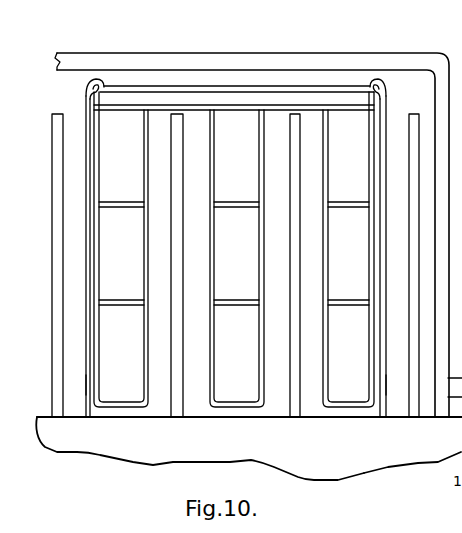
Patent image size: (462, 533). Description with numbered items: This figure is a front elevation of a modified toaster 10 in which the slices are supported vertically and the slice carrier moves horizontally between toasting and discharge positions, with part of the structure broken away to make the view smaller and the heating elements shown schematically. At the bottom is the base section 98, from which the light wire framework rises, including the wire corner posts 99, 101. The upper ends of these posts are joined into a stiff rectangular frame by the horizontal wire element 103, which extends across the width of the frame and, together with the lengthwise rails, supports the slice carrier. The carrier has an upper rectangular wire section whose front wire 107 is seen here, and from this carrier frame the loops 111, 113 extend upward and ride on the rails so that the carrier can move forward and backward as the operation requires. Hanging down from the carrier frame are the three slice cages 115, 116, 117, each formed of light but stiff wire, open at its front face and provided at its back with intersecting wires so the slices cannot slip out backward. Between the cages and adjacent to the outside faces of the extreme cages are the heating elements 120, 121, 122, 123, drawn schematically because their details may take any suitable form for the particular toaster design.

The storage assembly 10 is at (372, 478).
The base section 98 is at (155, 452).
The wire corner post 99 is at (383, 382).
The wire corner post 101 is at (83, 382).
The horizontal wire element 103 is at (260, 88).
The front wire 107 is at (200, 106).
The loop 111 is at (377, 80).
The loop 113 is at (97, 78).
The slice cage 115 is at (121, 249).
The slice cage 116 is at (237, 258).
The slice cage 117 is at (348, 249).
The heating element 120 is at (59, 113).
The heating element 121 is at (174, 113).
The heating element 122 is at (295, 113).
The heating element 123 is at (414, 113).